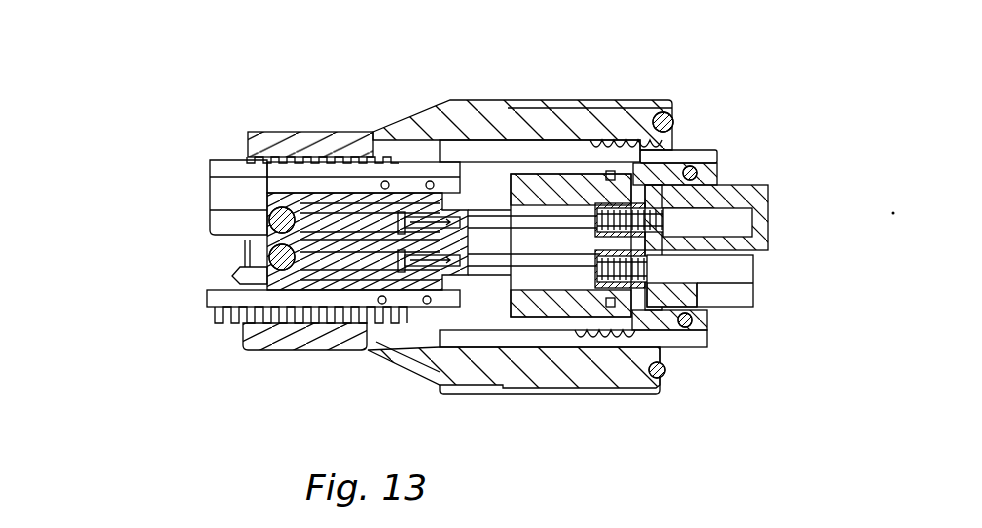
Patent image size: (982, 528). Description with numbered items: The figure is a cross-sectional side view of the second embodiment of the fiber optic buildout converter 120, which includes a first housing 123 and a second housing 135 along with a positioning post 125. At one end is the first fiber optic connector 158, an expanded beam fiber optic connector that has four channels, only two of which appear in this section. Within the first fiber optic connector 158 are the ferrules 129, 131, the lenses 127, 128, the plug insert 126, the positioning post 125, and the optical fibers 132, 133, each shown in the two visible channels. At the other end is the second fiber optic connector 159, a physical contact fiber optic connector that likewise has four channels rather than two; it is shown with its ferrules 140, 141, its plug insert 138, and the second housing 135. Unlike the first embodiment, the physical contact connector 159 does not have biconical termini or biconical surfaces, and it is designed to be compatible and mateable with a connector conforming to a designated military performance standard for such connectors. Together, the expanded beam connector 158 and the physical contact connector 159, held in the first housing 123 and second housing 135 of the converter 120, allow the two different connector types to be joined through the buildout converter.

The fiber optic buildout converter 120 is at (340, 72).
The first housing 123 is at (222, 160).
The positioning post 125 is at (250, 270).
The plug insert 126 is at (262, 205).
The lens 127 is at (240, 285).
The lens 128 is at (270, 215).
The ferrule 129 is at (270, 248).
The ferrule 131 is at (265, 232).
The optical fiber 132 is at (432, 358).
The optical fiber 133 is at (490, 218).
The second housing 135 is at (698, 152).
The plug insert 138 is at (737, 185).
The ferrule 140 is at (713, 276).
The ferrule 141 is at (752, 224).
The first fiber optic connector 158 is at (262, 252).
The second fiber optic connector 159 is at (720, 298).